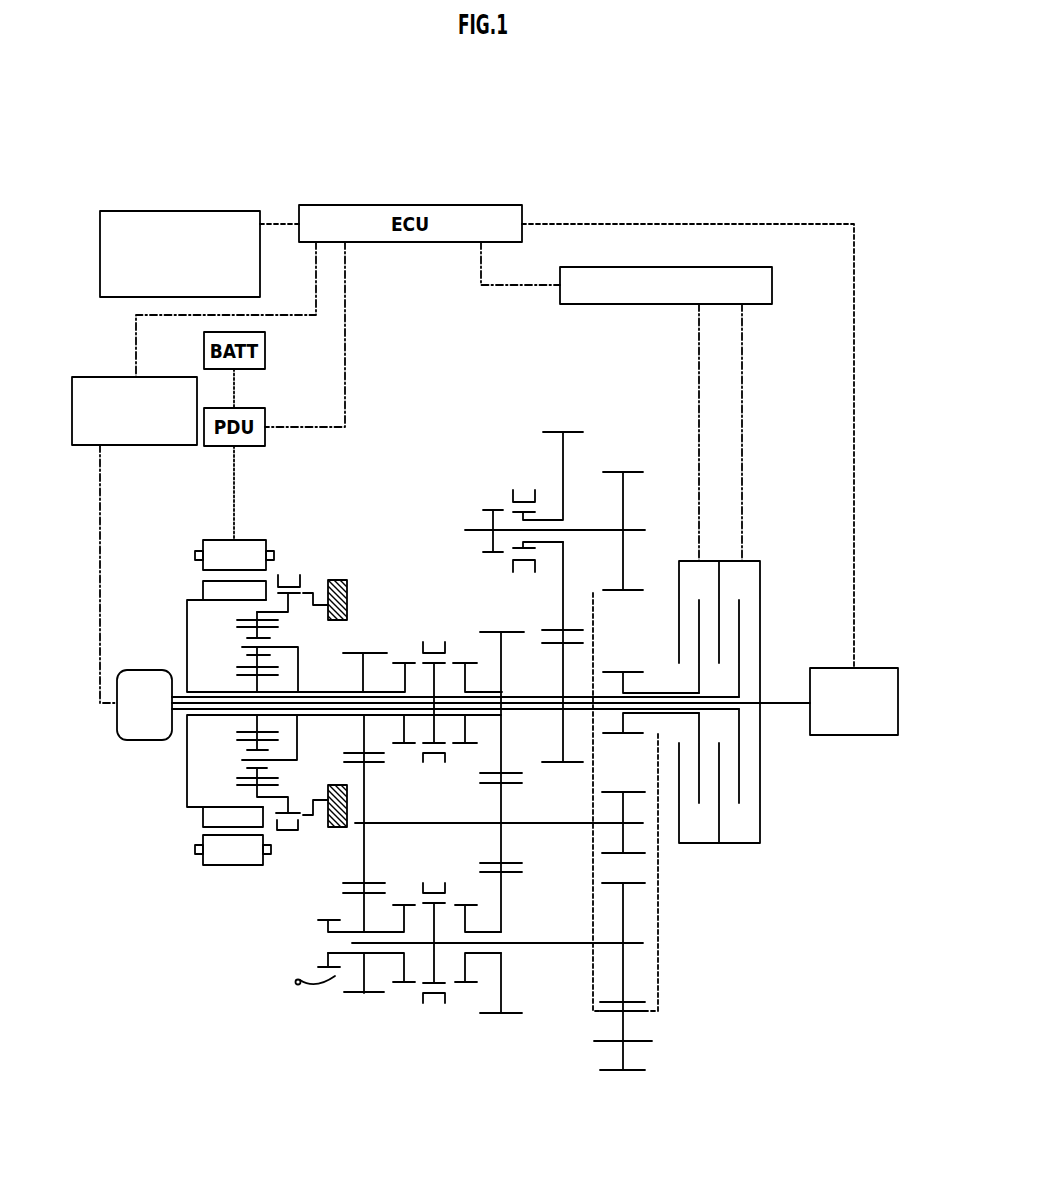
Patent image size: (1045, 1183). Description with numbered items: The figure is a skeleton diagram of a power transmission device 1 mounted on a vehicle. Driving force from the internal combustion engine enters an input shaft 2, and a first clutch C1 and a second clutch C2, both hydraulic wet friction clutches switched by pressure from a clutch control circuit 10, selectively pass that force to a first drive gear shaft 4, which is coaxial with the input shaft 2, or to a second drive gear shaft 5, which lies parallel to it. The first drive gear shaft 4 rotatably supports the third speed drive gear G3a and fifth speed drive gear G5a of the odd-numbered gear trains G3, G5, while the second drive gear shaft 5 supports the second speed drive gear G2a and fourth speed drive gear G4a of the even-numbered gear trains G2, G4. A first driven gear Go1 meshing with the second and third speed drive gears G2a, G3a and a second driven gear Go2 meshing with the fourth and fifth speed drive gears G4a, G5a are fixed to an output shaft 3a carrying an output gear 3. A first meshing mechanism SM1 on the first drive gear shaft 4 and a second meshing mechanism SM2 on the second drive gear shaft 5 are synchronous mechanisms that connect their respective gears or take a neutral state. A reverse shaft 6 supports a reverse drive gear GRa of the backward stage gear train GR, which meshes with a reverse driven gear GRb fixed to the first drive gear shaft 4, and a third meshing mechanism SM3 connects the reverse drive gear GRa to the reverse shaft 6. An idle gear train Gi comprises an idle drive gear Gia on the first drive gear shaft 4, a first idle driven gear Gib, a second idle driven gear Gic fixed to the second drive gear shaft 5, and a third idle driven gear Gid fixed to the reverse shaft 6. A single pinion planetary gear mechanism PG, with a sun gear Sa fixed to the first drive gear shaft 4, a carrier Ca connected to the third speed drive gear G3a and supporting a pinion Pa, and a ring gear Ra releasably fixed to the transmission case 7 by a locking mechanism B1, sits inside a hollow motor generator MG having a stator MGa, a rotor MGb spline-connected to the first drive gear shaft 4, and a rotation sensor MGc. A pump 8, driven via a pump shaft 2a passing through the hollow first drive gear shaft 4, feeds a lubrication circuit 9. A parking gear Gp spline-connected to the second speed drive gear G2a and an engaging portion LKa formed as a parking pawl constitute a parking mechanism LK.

The power transmission device 1 is at (298, 152).
The input shaft 2 is at (785, 697).
The pump shaft 2a is at (750, 711).
The output gear 3 is at (527, 849).
The output shaft 3a is at (635, 826).
The first drive gear shaft 4 is at (659, 690).
The second drive gear shaft 5 is at (558, 945).
The reverse shaft 6 is at (582, 535).
The transmission case 7 is at (338, 580).
The pump 8 is at (143, 670).
The lubrication circuit 9 is at (101, 377).
The clutch control circuit 10 is at (773, 292).
The motor generator MG is at (206, 665).
The stator MGa is at (204, 539).
The rotor MGb is at (202, 590).
The rotation sensor MGc is at (193, 211).
The locking mechanism B1 is at (290, 565).
The planetary gear mechanism PG is at (344, 678).
The pinion Pa is at (241, 624).
The sun gear Sa is at (246, 663).
The ring gear Ra is at (245, 778).
The carrier Ca is at (285, 763).
The third speed gear train G3 is at (378, 650).
The third speed drive gear G3a is at (378, 764).
The fifth speed gear train G5 is at (504, 628).
The fifth speed drive gear G5a is at (522, 777).
The second speed gear train G2 is at (351, 1012).
The second speed drive gear G2a is at (354, 998).
The fourth speed gear train G4 is at (528, 1021).
The fourth speed drive gear G4a is at (523, 1016).
The parking gear Gp is at (326, 919).
The first driven gear Go1 is at (380, 888).
The second driven gear Go2 is at (520, 870).
The gear train for backward stage GR is at (541, 468).
The reverse drive gear GRa is at (566, 431).
The reverse driven gear GRb is at (534, 646).
The idle gear train Gi is at (658, 1014).
The idle drive gear Gia is at (623, 736).
The first idle driven gear Gib is at (632, 1073).
The second idle driven gear Gic is at (636, 1014).
The third idle driven gear Gid is at (624, 471).
The first meshing mechanism SM1 is at (449, 636).
The second meshing mechanism SM2 is at (437, 1012).
The third meshing mechanism SM3 is at (503, 485).
The parking mechanism LK is at (293, 992).
The engaging portion LKa is at (325, 962).
The first clutch C1 is at (736, 702).
The second clutch C2 is at (719, 702).